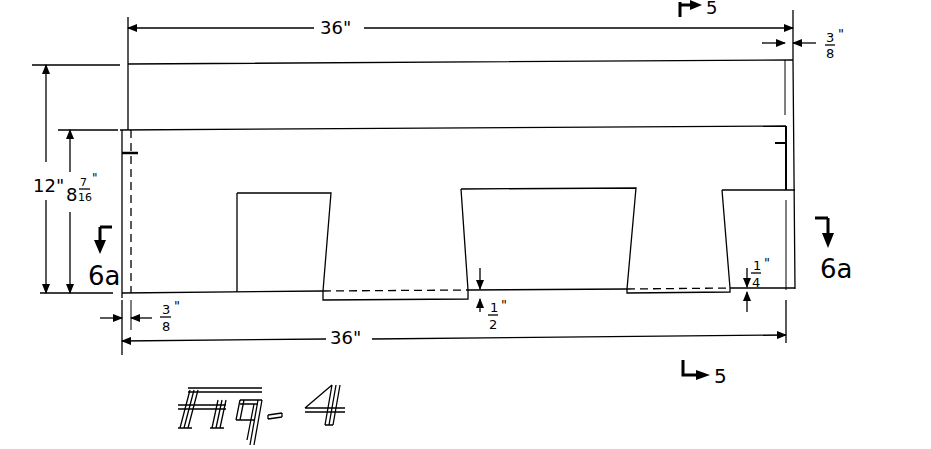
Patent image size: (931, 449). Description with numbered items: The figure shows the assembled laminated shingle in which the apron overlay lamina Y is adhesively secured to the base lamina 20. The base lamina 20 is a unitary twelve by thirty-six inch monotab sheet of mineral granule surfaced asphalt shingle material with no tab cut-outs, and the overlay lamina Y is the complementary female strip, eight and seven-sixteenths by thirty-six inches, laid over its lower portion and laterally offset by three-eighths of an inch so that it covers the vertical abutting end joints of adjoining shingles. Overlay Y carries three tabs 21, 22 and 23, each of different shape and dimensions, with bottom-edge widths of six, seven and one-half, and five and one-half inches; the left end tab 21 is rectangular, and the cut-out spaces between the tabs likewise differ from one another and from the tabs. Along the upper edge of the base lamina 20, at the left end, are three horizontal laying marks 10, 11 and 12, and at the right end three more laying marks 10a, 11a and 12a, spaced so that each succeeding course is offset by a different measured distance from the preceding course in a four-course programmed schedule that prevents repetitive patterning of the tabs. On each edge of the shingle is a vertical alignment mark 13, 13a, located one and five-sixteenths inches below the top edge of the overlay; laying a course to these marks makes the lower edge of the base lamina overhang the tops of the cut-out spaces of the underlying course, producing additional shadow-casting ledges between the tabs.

The laying mark 10 is at (193, 64).
The laying mark 11 is at (213, 64).
The laying mark 12 is at (288, 64).
The vertical alignment mark 13 is at (138, 153).
The laying mark 10a is at (722, 60).
The laying mark 11a is at (701, 60).
The laying mark 12a is at (625, 60).
The vertical alignment mark 13a is at (775, 143).
The base lamina 20 is at (446, 112).
The tab 21 is at (220, 280).
The tab 22 is at (440, 299).
The tab 23 is at (662, 291).
The overlay lamina Y is at (408, 200).